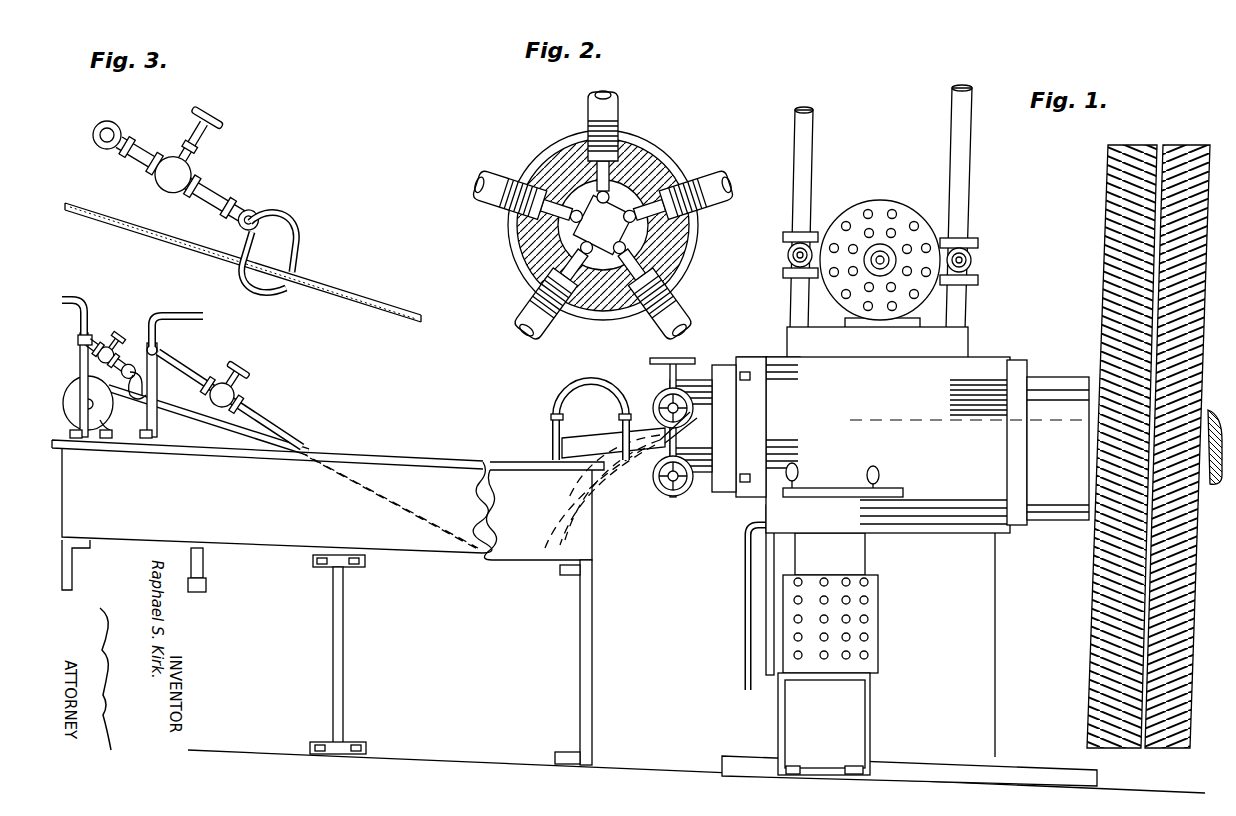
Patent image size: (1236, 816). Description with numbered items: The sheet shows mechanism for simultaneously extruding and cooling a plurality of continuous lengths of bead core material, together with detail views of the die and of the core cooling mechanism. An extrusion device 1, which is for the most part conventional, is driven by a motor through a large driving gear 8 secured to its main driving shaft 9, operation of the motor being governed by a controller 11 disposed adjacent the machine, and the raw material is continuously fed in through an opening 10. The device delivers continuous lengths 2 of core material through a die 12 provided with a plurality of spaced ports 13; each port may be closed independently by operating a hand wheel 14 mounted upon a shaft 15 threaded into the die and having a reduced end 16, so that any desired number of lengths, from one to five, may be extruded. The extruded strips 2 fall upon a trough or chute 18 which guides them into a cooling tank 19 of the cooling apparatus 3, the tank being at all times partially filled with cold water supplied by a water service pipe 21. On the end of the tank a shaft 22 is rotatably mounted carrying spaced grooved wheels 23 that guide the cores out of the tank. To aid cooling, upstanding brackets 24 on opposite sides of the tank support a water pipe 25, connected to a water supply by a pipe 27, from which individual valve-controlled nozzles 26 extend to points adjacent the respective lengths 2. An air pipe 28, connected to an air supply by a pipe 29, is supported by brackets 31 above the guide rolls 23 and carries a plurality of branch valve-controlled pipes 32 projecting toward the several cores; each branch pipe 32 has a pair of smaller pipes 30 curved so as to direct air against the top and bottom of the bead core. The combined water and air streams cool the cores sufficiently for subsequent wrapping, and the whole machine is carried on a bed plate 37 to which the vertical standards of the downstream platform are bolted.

In FIG. 1, the extrusion device 1 is at (972, 512).
In FIG. 3, the continuous lengths of bead core material 2 is at (348, 291).
In FIG. 1, the continuous lengths of bead core material 2 is at (650, 425).
In FIG. 1, the cooling apparatus 3 is at (456, 593).
In FIG. 1, the large driving gear 8 is at (1172, 155).
In FIG. 1, the main driving shaft 9 is at (1216, 412).
In FIG. 1, the opening 10 is at (983, 370).
In FIG. 1, the controller 11 is at (882, 612).
In FIG. 2, the die 12 is at (672, 170).
In FIG. 1, the die 12 is at (693, 480).
In FIG. 2, the spaced ports 13 is at (650, 232).
In FIG. 1, the hand wheel 14 is at (688, 360).
In FIG. 2, the shaft 15 is at (622, 112).
In FIG. 2, the reduced end 16 is at (527, 233).
In FIG. 1, the trough or chute 18 is at (611, 448).
In FIG. 1, the cooling tank 19 is at (392, 466).
In FIG. 1, the water service pipe 21 is at (590, 380).
In FIG. 1, the shaft 22 is at (100, 410).
In FIG. 1, the spaced grooved wheels 23 is at (105, 428).
In FIG. 1, the upstanding brackets 24 is at (160, 382).
In FIG. 1, the water pipe 25 is at (147, 350).
In FIG. 1, the valve-controlled nozzles 26 is at (246, 406).
In FIG. 1, the pipe 27 is at (180, 316).
In FIG. 3, the air pipe 28 is at (112, 124).
In FIG. 1, the air pipe 28 is at (90, 337).
In FIG. 1, the pipe 29 is at (86, 300).
In FIG. 3, the smaller curved pipes 30 is at (291, 242).
In FIG. 1, the smaller curved pipes 30 is at (140, 380).
In FIG. 1, the brackets 31 is at (80, 358).
In FIG. 3, the branch valve-controlled pipes 32 is at (207, 185).
In FIG. 1, the branch valve-controlled pipes 32 is at (112, 346).
In FIG. 1, the bed plate 37 is at (633, 768).